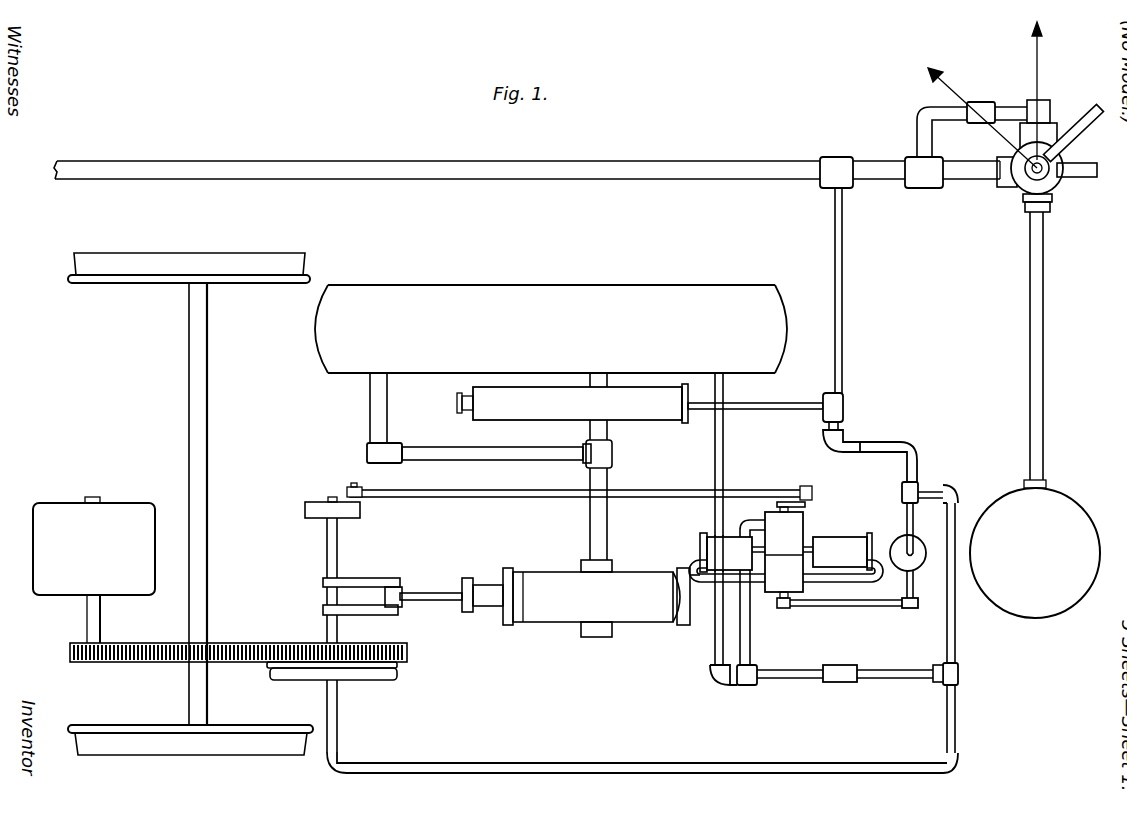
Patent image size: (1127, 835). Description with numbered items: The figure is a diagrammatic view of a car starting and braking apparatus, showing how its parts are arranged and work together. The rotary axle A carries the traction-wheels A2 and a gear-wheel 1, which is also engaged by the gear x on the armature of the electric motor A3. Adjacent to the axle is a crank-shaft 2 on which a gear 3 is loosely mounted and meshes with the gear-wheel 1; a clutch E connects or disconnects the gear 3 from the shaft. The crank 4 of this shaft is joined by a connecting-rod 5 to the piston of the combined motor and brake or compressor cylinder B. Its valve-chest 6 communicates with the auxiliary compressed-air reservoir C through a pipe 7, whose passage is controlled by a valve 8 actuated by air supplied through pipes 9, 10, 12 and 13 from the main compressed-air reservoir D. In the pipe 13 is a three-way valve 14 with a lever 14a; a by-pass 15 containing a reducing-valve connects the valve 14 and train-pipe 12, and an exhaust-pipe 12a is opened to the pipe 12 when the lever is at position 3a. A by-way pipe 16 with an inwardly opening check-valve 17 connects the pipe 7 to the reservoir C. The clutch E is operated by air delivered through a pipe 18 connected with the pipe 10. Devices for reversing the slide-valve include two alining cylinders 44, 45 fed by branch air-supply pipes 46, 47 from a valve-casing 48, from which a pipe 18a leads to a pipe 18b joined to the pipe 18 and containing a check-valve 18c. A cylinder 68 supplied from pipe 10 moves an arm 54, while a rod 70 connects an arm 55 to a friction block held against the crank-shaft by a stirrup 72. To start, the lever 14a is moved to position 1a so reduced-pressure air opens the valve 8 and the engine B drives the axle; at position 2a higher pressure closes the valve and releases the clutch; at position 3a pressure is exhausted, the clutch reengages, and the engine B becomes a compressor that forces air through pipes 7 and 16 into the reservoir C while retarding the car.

The gear-wheel 1 is at (228, 643).
The crank-shaft 2 is at (327, 627).
The gear 3 is at (407, 652).
The crank 4 is at (372, 578).
The connecting-rod 5 is at (451, 588).
The valve-chest 6 is at (601, 598).
The pipe 7 is at (607, 528).
The valve 8 is at (572, 403).
The pipe 9 is at (770, 412).
The pipe 10 is at (843, 332).
The train-pipe 12 is at (765, 165).
The pipe 13 is at (1032, 345).
The three-way valve 14 is at (1025, 185).
The by-pass 15 is at (917, 128).
The by-way pipe 16 is at (500, 460).
The check-valve 17 is at (367, 454).
The pipe 18 is at (598, 763).
The pipe 18a is at (750, 652).
The pipe 18b is at (930, 682).
The check-valve 18c is at (840, 682).
The cylinder 44 is at (732, 552).
The cylinder 45 is at (837, 551).
The branch air-supply pipe 46 is at (704, 580).
The branch air-supply pipe 47 is at (838, 582).
The valve-casing 48 is at (784, 552).
The arm 54 is at (850, 613).
The arm 55 is at (812, 505).
The cylinder 68 is at (915, 545).
The rod 70 is at (579, 499).
The stirrup 72 is at (305, 511).
The valve-lever position 1a is at (1048, 91).
The valve-lever position 2a is at (982, 115).
The valve-lever position 3a is at (1042, 163).
The exhaust-pipe 12a is at (1080, 178).
The lever 14a is at (1074, 122).
The rotary axle A is at (189, 489).
The traction-wheels A2 is at (190, 727).
The electric motor A3 is at (94, 570).
The combined motor and brake or compressor cylinder B is at (523, 625).
The auxiliary compressed-air reservoir C is at (551, 329).
The main compressed-air reservoir D is at (1035, 553).
The clutch E is at (397, 678).
The gear x is at (80, 662).